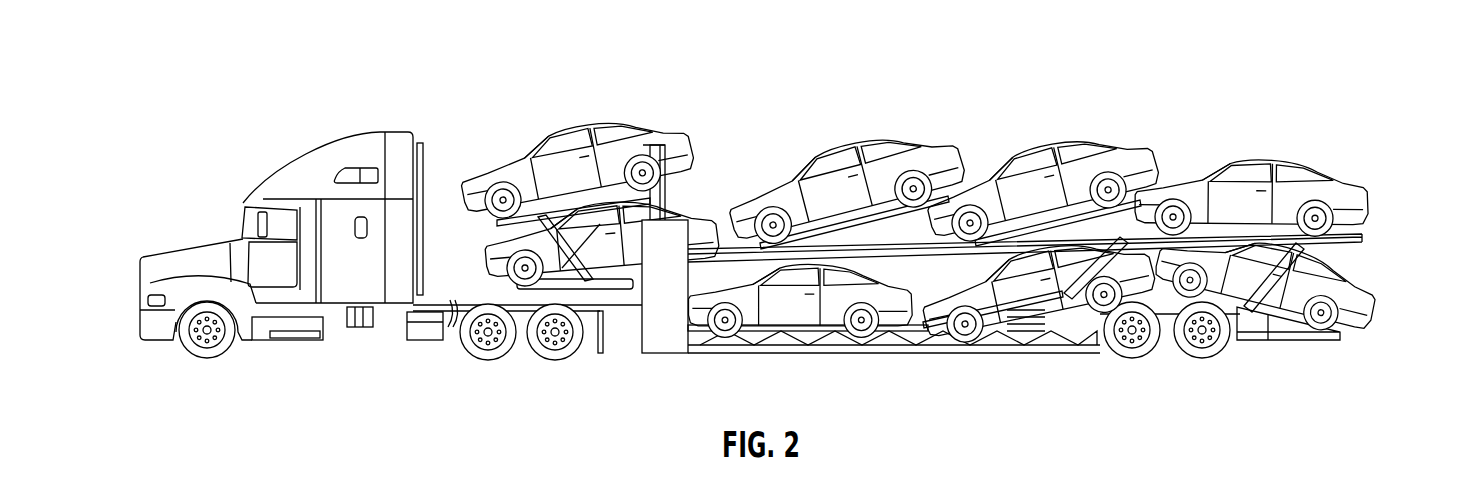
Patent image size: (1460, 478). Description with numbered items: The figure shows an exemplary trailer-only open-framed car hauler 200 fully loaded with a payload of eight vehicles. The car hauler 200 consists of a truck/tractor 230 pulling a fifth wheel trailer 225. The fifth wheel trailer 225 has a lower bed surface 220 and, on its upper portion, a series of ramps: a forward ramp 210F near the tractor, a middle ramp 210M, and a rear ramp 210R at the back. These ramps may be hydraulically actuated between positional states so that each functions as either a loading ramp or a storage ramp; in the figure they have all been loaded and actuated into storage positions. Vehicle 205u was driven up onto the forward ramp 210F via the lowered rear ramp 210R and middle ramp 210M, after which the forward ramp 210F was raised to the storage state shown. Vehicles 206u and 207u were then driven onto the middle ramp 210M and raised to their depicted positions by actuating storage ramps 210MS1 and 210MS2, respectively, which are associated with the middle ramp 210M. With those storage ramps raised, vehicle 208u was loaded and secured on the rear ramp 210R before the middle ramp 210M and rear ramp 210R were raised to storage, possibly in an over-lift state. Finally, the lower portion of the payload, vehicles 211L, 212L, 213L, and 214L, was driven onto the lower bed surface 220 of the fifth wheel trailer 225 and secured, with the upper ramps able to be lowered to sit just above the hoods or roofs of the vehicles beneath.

The open-framed car hauler 200 is at (158, 82).
The truck/tractor 230 is at (302, 170).
The fifth wheel trailer 225 is at (716, 386).
The vehicle 205u is at (570, 132).
The vehicle 206u is at (905, 132).
The vehicle 207u is at (1110, 145).
The vehicle 208u is at (1327, 163).
The vehicle 211L is at (540, 277).
The vehicle 212L is at (822, 348).
The vehicle 213L is at (1060, 297).
The vehicle 214L is at (1365, 298).
The forward ramp 210F is at (667, 188).
The middle ramp 210M is at (720, 247).
The storage ramp 210MS1 is at (962, 205).
The storage ramp 210MS2 is at (1150, 200).
The rear ramp 210R is at (1362, 240).
The lower bed surface 220 is at (947, 350).